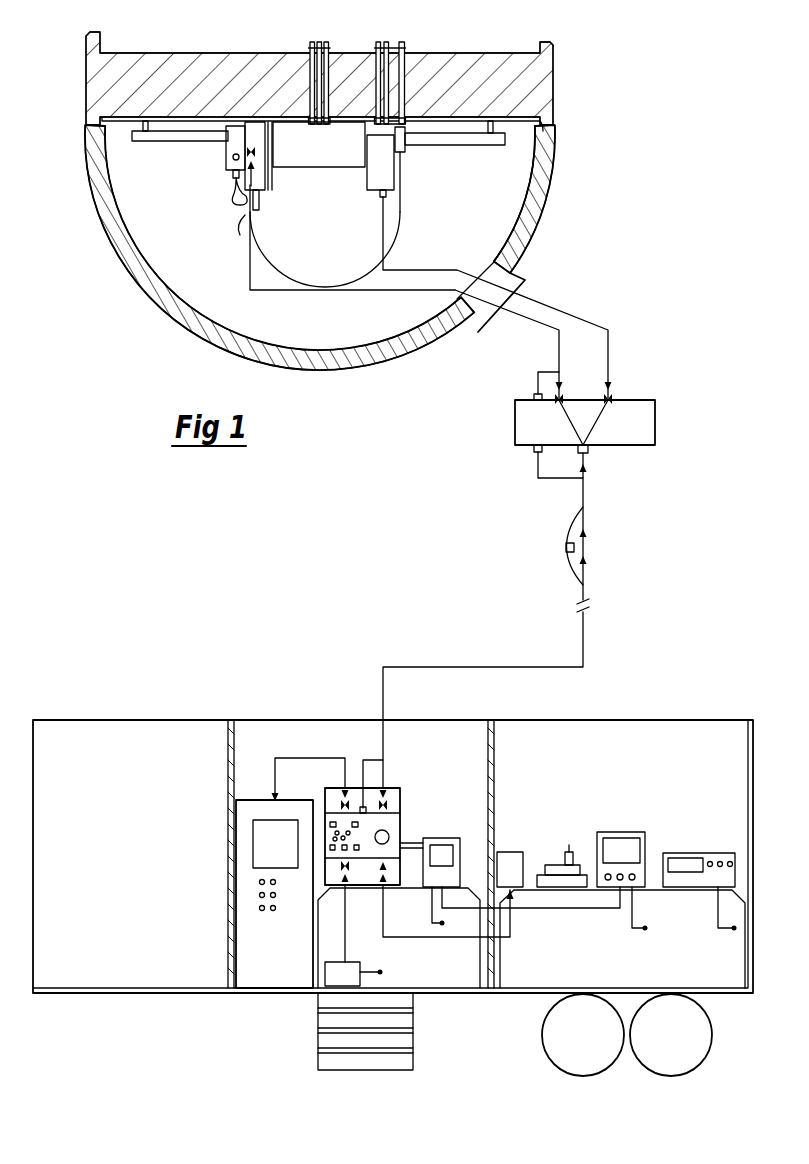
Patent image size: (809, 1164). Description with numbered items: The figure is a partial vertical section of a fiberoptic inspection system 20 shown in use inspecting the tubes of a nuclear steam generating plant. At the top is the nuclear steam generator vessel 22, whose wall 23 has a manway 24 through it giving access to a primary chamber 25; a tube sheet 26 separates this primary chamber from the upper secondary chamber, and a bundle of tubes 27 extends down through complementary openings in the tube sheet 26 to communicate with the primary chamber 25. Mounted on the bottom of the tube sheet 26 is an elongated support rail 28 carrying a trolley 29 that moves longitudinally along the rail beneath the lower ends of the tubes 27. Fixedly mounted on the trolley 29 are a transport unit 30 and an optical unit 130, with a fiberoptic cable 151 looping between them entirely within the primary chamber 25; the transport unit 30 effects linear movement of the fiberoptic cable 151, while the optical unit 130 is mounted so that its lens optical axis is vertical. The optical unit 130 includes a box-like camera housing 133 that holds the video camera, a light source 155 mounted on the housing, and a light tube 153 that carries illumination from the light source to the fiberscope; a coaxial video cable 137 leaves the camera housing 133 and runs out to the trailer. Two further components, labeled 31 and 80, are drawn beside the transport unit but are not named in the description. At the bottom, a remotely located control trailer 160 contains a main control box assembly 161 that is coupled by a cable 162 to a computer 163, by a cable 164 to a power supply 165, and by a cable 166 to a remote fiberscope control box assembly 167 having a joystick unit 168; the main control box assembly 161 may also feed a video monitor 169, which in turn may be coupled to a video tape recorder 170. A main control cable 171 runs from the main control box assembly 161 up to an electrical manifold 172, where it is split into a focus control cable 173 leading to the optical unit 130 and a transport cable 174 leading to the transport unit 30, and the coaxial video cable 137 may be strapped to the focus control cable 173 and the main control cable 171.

The fiberoptic inspection system 20 is at (180, 521).
The nuclear steam generator vessel 22 is at (141, 295).
The wall 23 is at (551, 197).
The manway 24 is at (527, 282).
The primary chamber 25 is at (521, 166).
The tube sheet 26 is at (460, 57).
The tubes 27 is at (386, 43).
The support rail 28 is at (172, 142).
The trolley 29 is at (328, 168).
The transport unit 30 is at (408, 187).
The sensor unit 31 is at (377, 177).
The transducer 80 is at (405, 148).
The optical unit 130 is at (268, 201).
The camera housing 133 is at (268, 178).
The coaxial video cable 137 is at (245, 216).
The fiberoptic cable 151 is at (296, 277).
The light tube 153 is at (234, 198).
The light source 155 is at (226, 150).
The control trailer 160 is at (629, 719).
The main control box assembly 161 is at (402, 829).
The cable 162 is at (303, 758).
The computer 163 is at (238, 931).
The cable 164 is at (347, 956).
The power supply 165 is at (333, 986).
The cable 166 is at (456, 938).
The remote fiberscope control box assembly 167 is at (543, 863).
The joystick unit 168 is at (563, 862).
The video monitor 169 is at (627, 832).
The video tape recorder 170 is at (698, 853).
The main control cable 171 is at (460, 666).
The electrical manifold 172 is at (632, 401).
The focus control cable 173 is at (550, 328).
The transport cable 174 is at (600, 331).